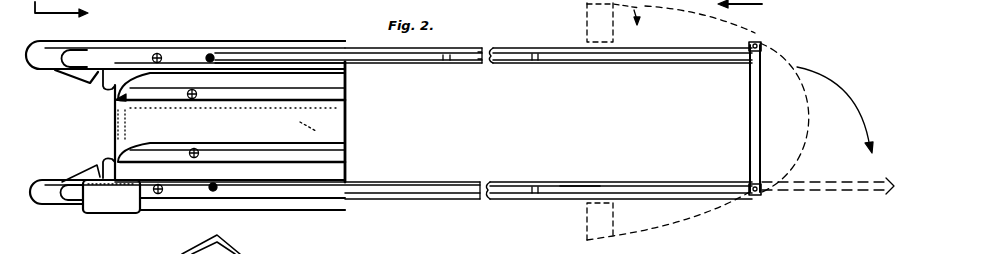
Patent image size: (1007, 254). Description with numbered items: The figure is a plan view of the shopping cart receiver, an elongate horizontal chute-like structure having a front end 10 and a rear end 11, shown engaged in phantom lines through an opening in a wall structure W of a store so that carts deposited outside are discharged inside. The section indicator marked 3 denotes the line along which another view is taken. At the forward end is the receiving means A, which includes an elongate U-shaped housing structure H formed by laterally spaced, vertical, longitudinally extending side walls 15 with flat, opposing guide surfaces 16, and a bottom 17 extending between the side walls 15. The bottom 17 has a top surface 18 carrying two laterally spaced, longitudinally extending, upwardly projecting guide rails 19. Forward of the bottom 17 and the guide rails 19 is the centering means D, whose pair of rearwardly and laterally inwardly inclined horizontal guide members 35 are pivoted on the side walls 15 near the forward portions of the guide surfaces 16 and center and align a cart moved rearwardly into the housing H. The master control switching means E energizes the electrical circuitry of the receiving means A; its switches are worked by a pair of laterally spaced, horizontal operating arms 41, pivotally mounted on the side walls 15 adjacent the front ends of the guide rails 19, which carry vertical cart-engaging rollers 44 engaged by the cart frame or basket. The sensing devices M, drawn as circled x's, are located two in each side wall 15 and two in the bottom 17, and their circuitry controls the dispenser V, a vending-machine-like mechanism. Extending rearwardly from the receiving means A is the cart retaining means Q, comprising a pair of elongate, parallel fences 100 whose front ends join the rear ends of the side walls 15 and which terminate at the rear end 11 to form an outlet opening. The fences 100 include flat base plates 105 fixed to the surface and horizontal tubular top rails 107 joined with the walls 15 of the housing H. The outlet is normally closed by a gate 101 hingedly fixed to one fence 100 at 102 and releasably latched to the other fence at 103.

The section line 3- 3 is at (68, 11).
The front end 10 is at (28, 202).
The rear end 11 is at (762, 192).
The side walls 15 is at (302, 24).
The guide surfaces 16 is at (303, 78).
The bottom 17 is at (322, 130).
The top surface 18 is at (337, 132).
The guide rails 19 is at (330, 92).
The guide members 35 is at (88, 77).
The operating arms 41 is at (115, 100).
The cart-engaging rollers 44 is at (110, 85).
The fences 100 is at (700, 63).
The gate 101 is at (762, 108).
The hinge 102 is at (753, 192).
The latch means 103 is at (805, 36).
The base plates 105 is at (567, 63).
The top rails 107 is at (670, 158).
The receiving means A is at (332, 34).
The centering means D is at (84, 60).
The master control switching means E is at (116, 60).
The housing structure H is at (266, 34).
The sensing devices M is at (160, 50).
The cart retaining means Q is at (572, 170).
The dispenser V is at (115, 222).
The wall structure W is at (580, 221).